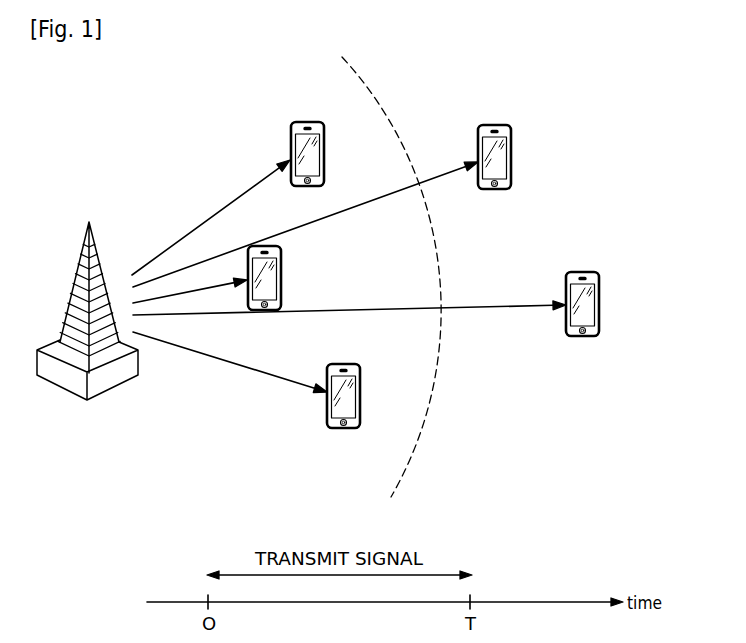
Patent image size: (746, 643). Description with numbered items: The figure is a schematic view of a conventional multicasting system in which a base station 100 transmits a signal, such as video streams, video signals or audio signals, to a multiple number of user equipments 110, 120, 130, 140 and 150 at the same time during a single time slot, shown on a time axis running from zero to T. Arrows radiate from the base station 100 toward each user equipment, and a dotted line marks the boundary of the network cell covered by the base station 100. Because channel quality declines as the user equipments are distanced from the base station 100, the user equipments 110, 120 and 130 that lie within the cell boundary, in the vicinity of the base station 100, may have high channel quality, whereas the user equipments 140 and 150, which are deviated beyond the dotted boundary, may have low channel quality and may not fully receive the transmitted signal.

The base station 100 is at (87, 232).
The user equipment 110 is at (324, 152).
The user equipment 120 is at (281, 279).
The user equipment 130 is at (360, 393).
The user equipment 140 is at (511, 158).
The user equipment 150 is at (599, 302).